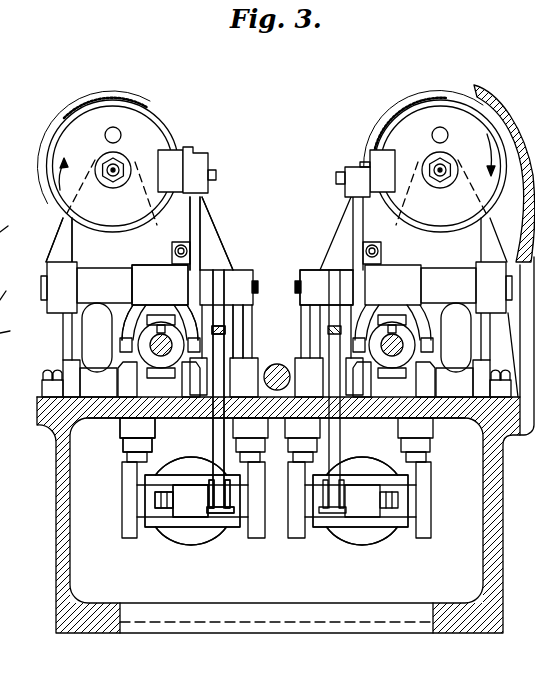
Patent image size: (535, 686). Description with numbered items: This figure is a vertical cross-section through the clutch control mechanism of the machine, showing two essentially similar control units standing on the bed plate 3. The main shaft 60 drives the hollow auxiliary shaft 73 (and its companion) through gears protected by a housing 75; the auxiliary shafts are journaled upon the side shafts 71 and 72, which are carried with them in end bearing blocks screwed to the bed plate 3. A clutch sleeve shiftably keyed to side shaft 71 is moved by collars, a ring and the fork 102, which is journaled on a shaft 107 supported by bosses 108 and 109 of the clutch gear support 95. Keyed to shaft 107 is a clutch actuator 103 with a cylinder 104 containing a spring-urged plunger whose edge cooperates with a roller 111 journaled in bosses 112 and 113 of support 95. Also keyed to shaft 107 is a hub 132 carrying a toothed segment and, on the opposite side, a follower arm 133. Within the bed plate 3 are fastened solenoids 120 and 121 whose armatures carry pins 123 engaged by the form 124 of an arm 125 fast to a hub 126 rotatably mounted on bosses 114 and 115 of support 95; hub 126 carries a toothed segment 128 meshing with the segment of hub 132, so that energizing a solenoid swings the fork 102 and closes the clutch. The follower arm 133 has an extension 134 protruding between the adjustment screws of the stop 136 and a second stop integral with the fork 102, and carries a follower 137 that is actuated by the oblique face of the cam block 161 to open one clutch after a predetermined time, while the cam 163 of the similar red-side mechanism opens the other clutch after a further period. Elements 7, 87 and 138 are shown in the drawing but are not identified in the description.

The bed plate 3 is at (58, 458).
The shaft 7 is at (4, 222).
The main shaft 60 is at (288, 360).
The side shaft 71 is at (178, 366).
The side shaft 72 is at (392, 355).
The auxiliary shaft 73 is at (14, 331).
The housing 75 is at (12, 287).
The guard 87 is at (497, 102).
The clutch gear support 95 is at (68, 247).
The fork 102 is at (160, 302).
The clutch actuator 103 is at (104, 285).
The cylinder 104 is at (92, 333).
The shaft 107 is at (258, 289).
The boss 108 is at (59, 287).
The boss 109 is at (305, 270).
The roller 111 is at (98, 382).
The boss 112 is at (60, 388).
The boss 113 is at (120, 400).
The boss 114 is at (192, 402).
The boss 115 is at (244, 377).
The solenoid 120 is at (371, 536).
The solenoid 121 is at (184, 535).
The pin 123 is at (237, 528).
The form 124 is at (228, 482).
The arm 125 is at (214, 453).
The hub 126 is at (228, 358).
The toothed segment 128 is at (222, 338).
The hub 132 is at (229, 268).
The follower arm 133 is at (202, 235).
The extension 134 is at (187, 247).
The stop 136 is at (172, 264).
The follower 137 is at (195, 150).
The bracket 138 is at (353, 172).
The cam block 161 is at (170, 157).
The cam 163 is at (385, 158).